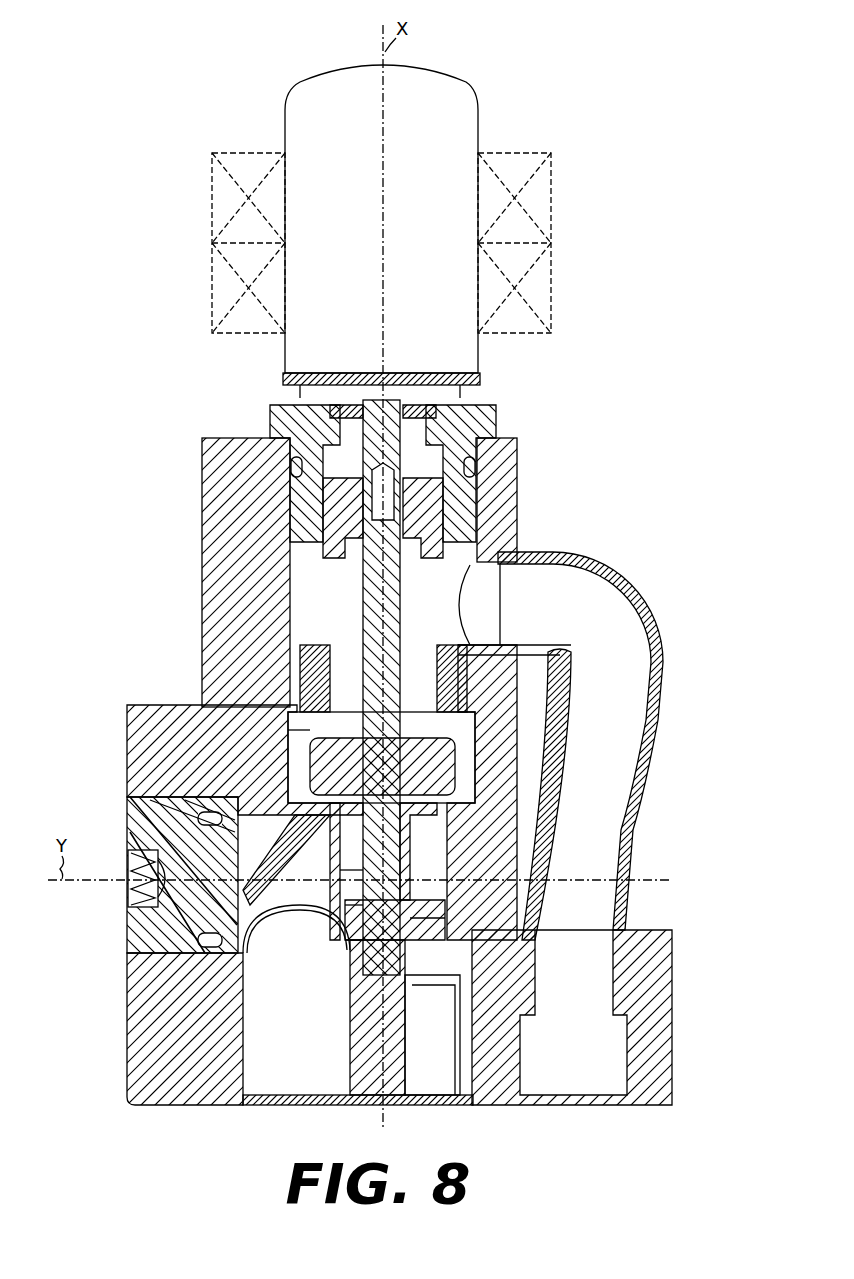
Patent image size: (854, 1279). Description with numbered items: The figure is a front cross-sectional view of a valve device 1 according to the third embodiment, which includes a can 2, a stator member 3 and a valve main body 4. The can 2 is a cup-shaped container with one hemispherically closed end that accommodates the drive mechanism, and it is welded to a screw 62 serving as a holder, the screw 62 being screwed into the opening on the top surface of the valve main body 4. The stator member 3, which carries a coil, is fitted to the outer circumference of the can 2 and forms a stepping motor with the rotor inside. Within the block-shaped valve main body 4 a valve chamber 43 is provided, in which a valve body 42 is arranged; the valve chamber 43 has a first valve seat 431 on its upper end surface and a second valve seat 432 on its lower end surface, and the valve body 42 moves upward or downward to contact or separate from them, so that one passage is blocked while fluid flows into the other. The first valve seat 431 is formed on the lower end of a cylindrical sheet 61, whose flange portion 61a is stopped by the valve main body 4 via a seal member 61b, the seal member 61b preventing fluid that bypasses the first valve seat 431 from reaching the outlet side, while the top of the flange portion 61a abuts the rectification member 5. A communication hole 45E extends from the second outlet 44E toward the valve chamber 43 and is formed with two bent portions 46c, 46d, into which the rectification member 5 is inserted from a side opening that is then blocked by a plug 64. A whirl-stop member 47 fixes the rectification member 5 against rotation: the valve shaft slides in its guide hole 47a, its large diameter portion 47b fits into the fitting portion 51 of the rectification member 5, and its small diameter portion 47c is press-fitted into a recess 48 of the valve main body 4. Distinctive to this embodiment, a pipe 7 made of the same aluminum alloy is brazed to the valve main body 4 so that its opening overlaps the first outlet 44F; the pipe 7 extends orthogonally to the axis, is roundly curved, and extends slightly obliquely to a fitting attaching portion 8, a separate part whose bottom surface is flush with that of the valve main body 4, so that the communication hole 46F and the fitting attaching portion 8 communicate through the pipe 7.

The valve device 1 is at (548, 95).
The can 2 is at (470, 82).
The stator member 3 is at (555, 172).
The valve main body 4 is at (202, 489).
The rectification member 5 is at (230, 905).
The pipe 7 is at (656, 700).
The fitting attaching portion 8 is at (672, 986).
The valve body 42 is at (295, 758).
The valve chamber 43 is at (300, 760).
The first valve seat 431 is at (330, 730).
The second valve seat 432 is at (320, 800).
The second outlet 44E is at (286, 1108).
The first outlet 44F is at (523, 571).
The communication hole 45E is at (240, 1040).
The communication hole 46F is at (520, 540).
The bent portion 46c is at (225, 828).
The bent portion 46d is at (450, 880).
The whirl-stop member 47 is at (350, 965).
The guide hole 47a is at (352, 886).
The large diameter portion 47b is at (358, 907).
The small diameter portion 47c is at (350, 945).
The recess 48 is at (348, 986).
The fitting portion 51 is at (430, 918).
The cylindrical sheet 61 is at (300, 683).
The flange portion 61a is at (300, 665).
The seal member 61b is at (470, 655).
The screw 62 is at (270, 412).
The plug 64 is at (127, 861).